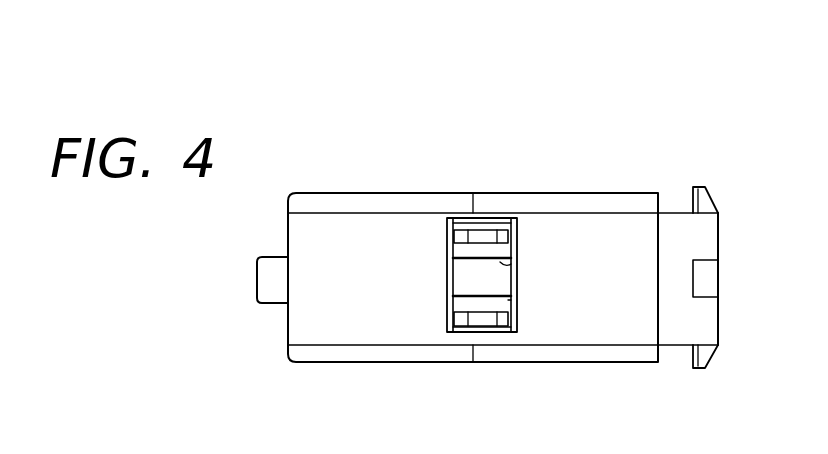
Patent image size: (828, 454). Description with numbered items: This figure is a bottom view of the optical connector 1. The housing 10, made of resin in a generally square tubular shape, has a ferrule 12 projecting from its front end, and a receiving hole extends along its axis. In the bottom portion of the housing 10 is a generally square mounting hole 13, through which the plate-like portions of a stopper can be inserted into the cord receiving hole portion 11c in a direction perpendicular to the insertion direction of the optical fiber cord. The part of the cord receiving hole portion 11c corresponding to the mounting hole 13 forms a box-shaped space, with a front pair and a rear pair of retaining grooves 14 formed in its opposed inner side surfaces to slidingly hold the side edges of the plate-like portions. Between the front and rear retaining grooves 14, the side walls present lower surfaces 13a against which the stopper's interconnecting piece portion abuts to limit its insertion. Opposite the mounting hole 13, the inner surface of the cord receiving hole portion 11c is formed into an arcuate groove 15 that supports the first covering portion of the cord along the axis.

The optical connector 1 is at (401, 124).
The housing 10 is at (627, 193).
The cord receiving hole portion 11c is at (508, 300).
The ferrule 12 is at (270, 305).
The mounting hole 13 is at (502, 277).
The lower surfaces of the side walls 13a is at (482, 307).
The retaining grooves 14 is at (517, 220).
The groove 15 is at (500, 262).